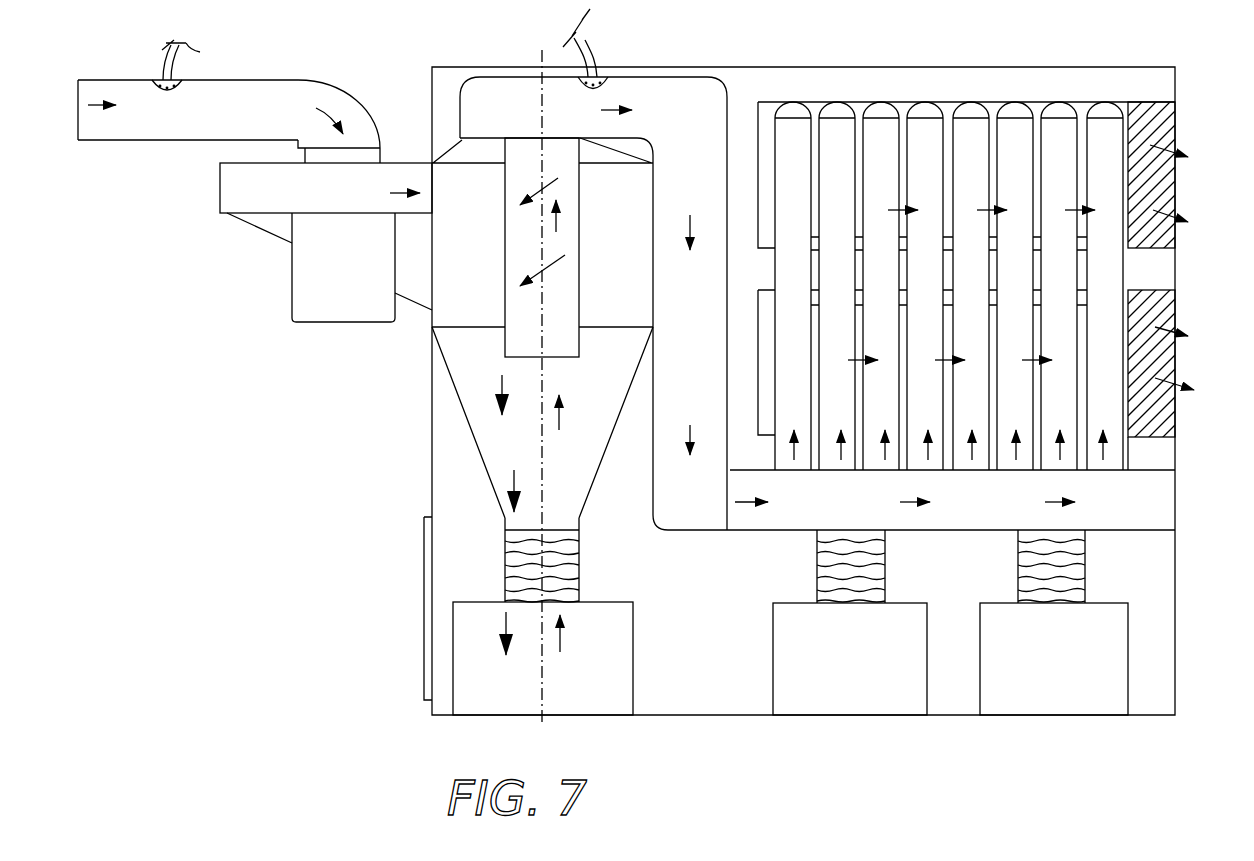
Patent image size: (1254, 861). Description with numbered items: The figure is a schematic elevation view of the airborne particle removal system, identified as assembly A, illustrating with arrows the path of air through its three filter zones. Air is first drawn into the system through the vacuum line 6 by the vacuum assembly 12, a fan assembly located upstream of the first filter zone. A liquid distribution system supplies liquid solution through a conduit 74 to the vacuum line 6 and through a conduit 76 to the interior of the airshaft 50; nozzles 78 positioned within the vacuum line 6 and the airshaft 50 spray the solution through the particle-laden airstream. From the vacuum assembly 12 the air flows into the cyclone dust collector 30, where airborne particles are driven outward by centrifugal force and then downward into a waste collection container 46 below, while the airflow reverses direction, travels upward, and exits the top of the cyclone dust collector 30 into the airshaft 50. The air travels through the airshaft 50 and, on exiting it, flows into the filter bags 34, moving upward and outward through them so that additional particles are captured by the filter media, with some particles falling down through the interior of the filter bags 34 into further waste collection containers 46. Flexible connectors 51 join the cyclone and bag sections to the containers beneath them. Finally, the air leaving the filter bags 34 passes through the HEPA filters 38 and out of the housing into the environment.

The dust collector housing A is at (1036, 67).
The vacuum line 6 is at (255, 128).
The conduit 74 is at (192, 68).
The nozzles 78 is at (163, 97).
The conduit 76 is at (594, 43).
The vacuum assembly 12 is at (305, 197).
The cyclone dust collector 30 is at (542, 334).
The airshaft 50 is at (817, 303).
The filter bags 34 is at (945, 306).
The HEPA filters 38 is at (1158, 318).
The flexible bellows connector 51 is at (570, 564).
The waste collection container 46 is at (602, 693).